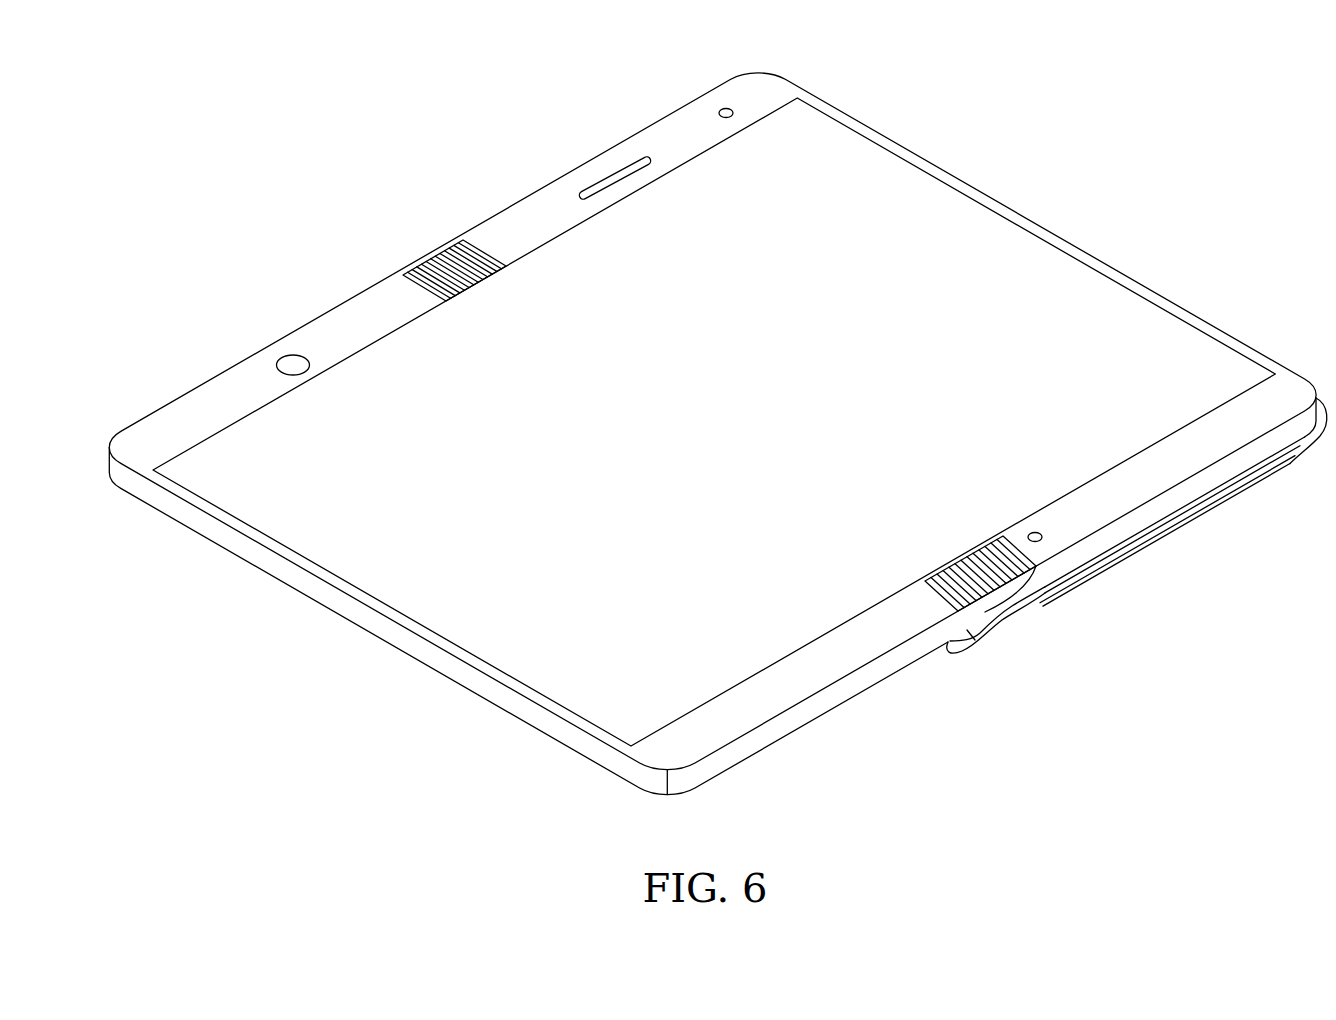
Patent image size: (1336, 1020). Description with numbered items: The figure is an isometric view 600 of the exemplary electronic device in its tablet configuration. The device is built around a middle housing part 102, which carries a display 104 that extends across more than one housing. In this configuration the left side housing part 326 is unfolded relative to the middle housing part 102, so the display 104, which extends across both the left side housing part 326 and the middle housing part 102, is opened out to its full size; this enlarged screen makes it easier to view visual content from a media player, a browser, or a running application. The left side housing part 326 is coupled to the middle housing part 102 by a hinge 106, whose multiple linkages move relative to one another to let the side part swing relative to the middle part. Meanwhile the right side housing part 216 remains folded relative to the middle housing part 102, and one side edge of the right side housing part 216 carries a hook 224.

The isometric view 600 is at (1150, 107).
The middle housing part 102 is at (658, 130).
The display 104 is at (381, 587).
The hinge 106 is at (433, 260).
The left side housing part 326 is at (473, 680).
The right side housing part 216 is at (1180, 518).
The hook 224 is at (962, 652).